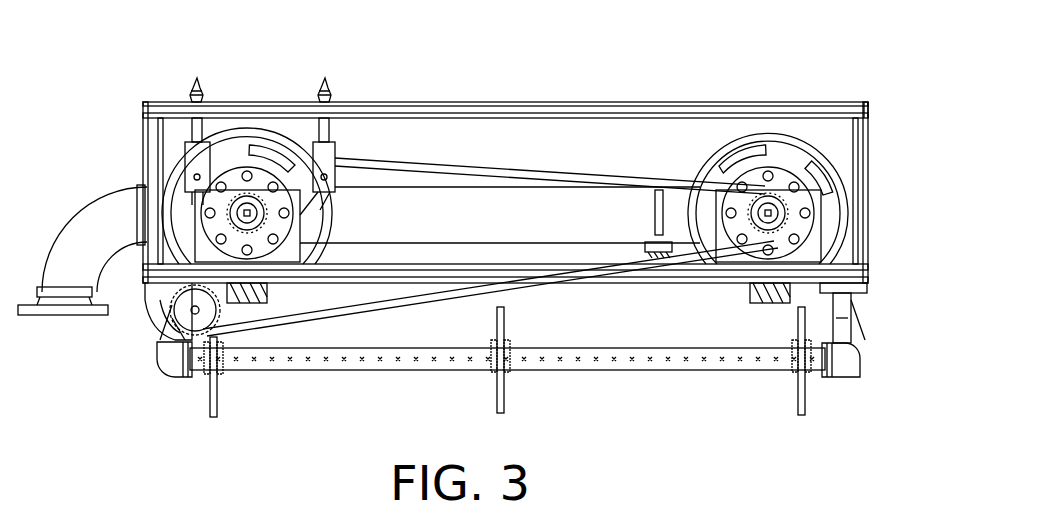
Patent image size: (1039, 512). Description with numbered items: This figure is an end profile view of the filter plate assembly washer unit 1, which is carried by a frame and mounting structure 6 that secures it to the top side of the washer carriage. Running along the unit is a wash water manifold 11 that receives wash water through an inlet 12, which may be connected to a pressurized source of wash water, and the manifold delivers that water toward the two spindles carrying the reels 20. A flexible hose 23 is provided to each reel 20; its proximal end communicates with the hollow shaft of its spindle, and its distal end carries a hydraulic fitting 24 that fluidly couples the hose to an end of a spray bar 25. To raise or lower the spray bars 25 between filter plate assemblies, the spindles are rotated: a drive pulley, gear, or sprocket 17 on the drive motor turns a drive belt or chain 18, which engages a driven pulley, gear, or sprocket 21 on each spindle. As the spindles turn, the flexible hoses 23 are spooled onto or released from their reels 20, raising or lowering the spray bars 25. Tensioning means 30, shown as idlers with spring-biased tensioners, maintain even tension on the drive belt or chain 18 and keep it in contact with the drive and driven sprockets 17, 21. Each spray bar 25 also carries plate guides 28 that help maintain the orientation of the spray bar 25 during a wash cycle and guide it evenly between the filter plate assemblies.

The filter plate assembly washer unit 1 is at (795, 66).
The frame and mounting structure 6 is at (392, 113).
The wash water manifold 11 is at (487, 208).
The inlet 12 is at (62, 313).
The drive pulley, gear, or sprocket 17 is at (187, 315).
The drive belt or chain 18 is at (458, 172).
The reel 20 is at (237, 148).
The driven pulley, gear, or sprocket 21 is at (230, 207).
The flexible hose 23 is at (813, 185).
The hydraulic fitting 24 is at (168, 357).
The spray bar 25 is at (373, 365).
The plate guide 28 is at (213, 408).
The tensioning means 30 is at (193, 158).